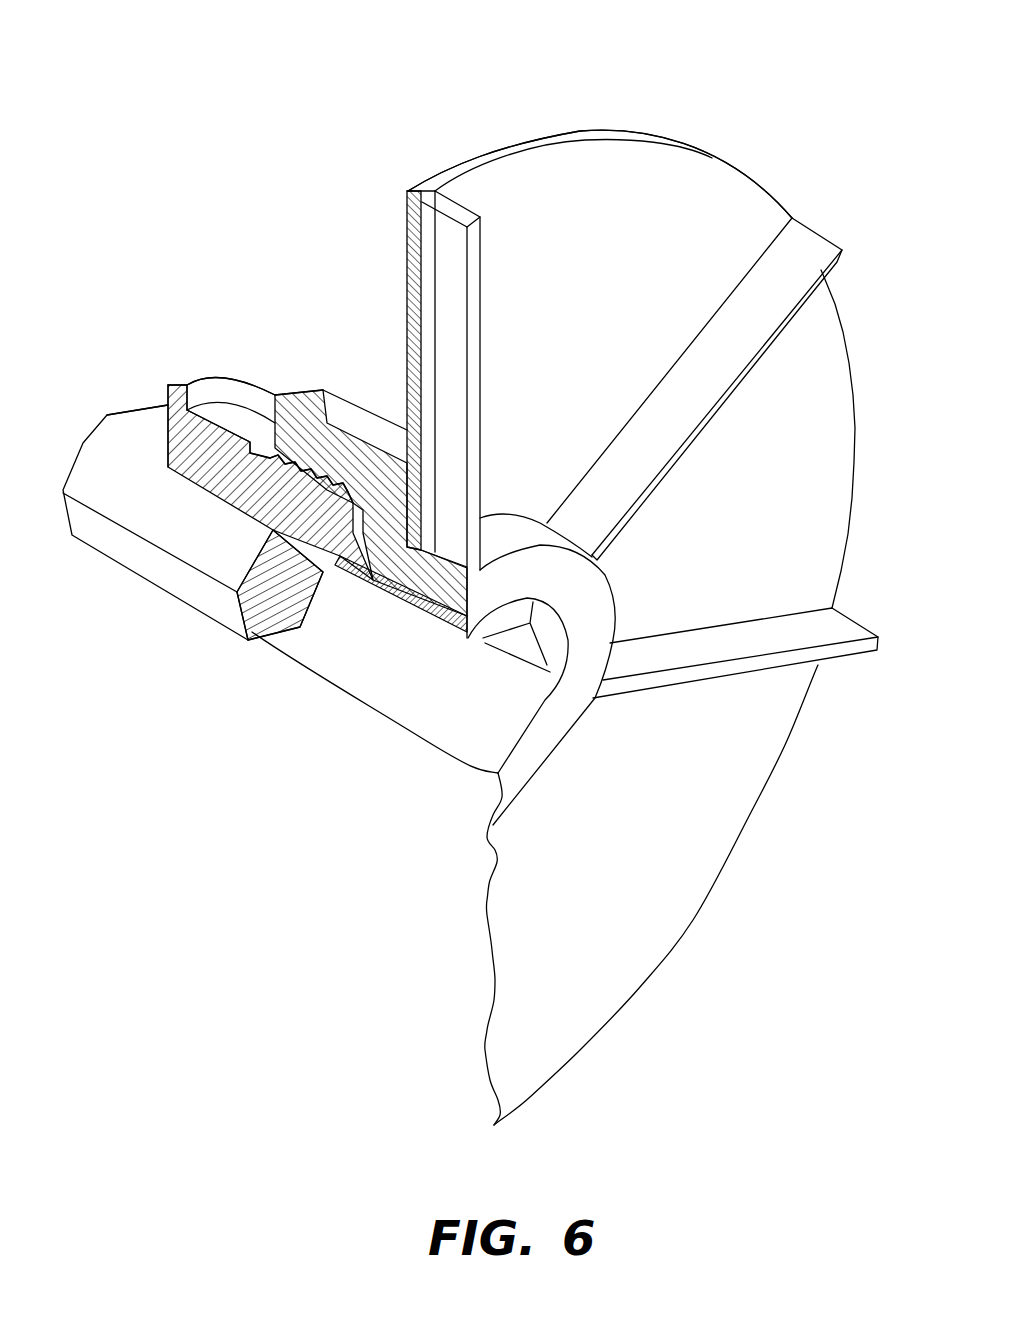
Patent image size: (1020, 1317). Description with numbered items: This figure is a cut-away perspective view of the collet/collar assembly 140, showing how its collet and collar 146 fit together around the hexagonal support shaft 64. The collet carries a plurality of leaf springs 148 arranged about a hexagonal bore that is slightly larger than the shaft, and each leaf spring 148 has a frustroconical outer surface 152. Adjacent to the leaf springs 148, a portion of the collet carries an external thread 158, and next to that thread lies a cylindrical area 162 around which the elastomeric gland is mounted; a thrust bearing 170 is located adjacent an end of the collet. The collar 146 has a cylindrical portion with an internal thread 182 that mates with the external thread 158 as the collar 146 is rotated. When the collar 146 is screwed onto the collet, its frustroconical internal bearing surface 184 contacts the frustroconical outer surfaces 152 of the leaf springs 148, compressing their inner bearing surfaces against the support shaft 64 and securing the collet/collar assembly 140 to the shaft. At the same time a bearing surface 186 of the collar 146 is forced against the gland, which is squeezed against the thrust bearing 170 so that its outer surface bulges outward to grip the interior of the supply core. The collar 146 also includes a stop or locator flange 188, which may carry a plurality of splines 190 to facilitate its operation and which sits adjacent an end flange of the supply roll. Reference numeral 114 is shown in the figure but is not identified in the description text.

The collet/collar assembly 140 is at (211, 63).
The stop or locator flange 188 is at (752, 180).
The splines 190 is at (836, 263).
The collar 146 is at (362, 372).
The frustroconical internal bearing surface 184 is at (410, 568).
The bearing surface 186 is at (282, 415).
The frustroconical outer surface 152 is at (437, 613).
The external thread 158 is at (208, 484).
The internal thread 182 is at (331, 488).
The cylindrical area 162 is at (196, 428).
The thrust bearing 170 is at (187, 385).
The fastener 114 is at (207, 370).
The support shaft 64 is at (200, 595).
The leaf springs 148 is at (524, 647).